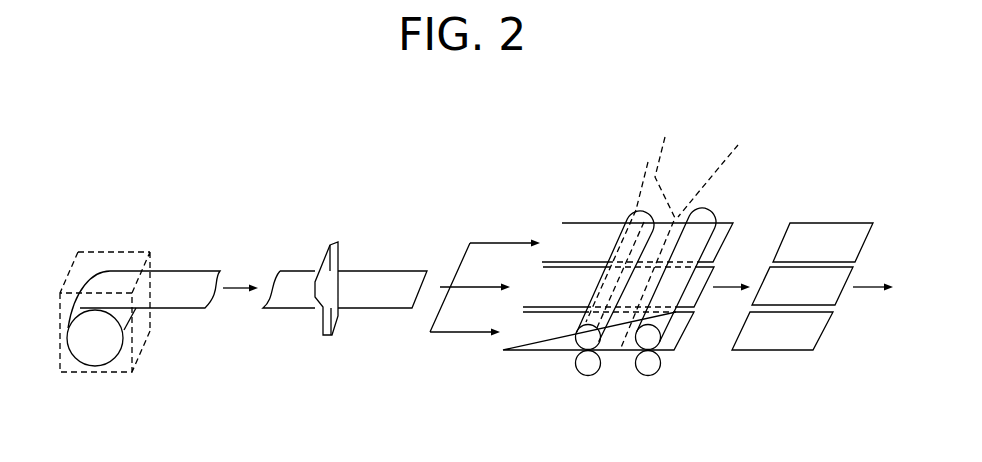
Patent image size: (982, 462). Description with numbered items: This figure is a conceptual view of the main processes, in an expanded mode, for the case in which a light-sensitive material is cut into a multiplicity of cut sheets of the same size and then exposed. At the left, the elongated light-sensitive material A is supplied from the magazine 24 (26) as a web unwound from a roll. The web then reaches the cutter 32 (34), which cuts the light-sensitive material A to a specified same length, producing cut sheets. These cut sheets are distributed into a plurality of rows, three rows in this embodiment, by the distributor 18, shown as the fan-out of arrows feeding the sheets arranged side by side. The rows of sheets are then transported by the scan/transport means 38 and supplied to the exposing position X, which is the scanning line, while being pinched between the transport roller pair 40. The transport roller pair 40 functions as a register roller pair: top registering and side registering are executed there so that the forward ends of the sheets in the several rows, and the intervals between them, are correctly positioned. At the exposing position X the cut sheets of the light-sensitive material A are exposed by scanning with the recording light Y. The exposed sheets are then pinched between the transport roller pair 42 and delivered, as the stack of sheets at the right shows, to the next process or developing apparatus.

The light-sensitive material A is at (175, 282).
The magazine 24 is at (147, 349).
The magazine 26 is at (97, 373).
The cutter 32 is at (399, 259).
The cutter 34 is at (338, 267).
The distributor 18 is at (518, 232).
The transport roller pair 40 is at (625, 220).
The transport roller pair 42 is at (703, 217).
The scan/transport means 38 is at (615, 373).
The exposing position X is at (714, 164).
The recording light Y is at (654, 231).